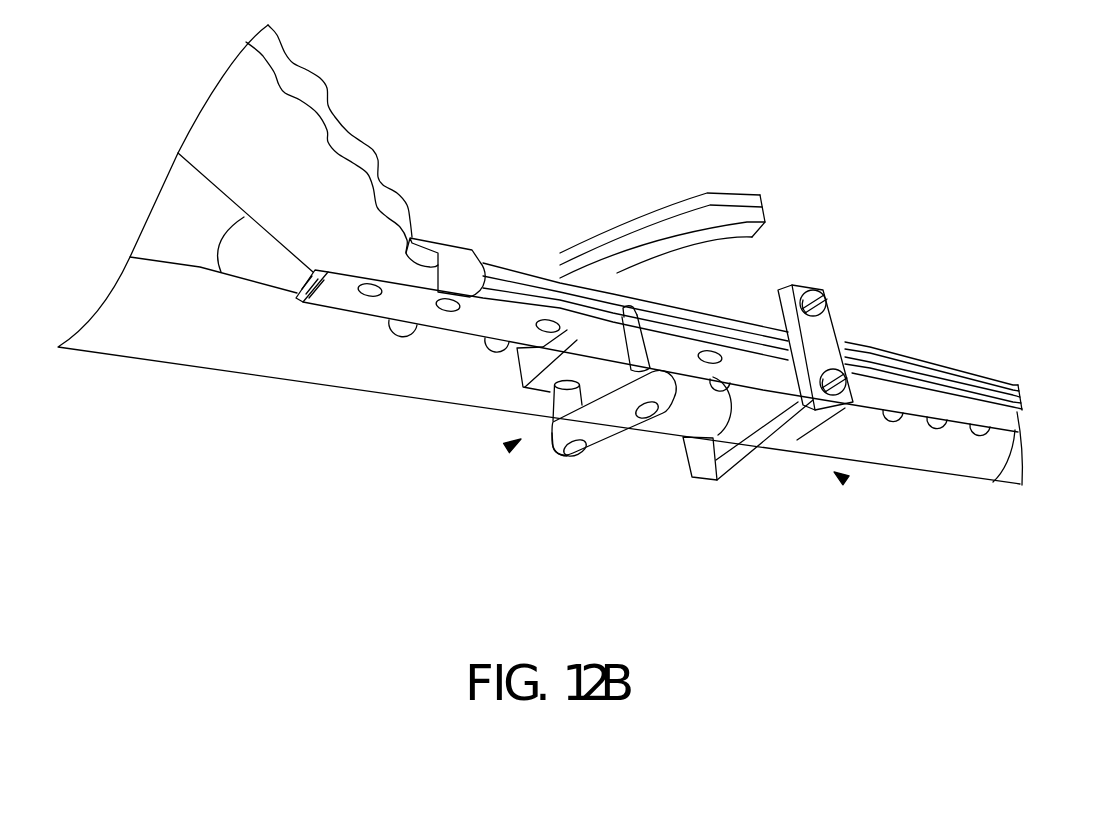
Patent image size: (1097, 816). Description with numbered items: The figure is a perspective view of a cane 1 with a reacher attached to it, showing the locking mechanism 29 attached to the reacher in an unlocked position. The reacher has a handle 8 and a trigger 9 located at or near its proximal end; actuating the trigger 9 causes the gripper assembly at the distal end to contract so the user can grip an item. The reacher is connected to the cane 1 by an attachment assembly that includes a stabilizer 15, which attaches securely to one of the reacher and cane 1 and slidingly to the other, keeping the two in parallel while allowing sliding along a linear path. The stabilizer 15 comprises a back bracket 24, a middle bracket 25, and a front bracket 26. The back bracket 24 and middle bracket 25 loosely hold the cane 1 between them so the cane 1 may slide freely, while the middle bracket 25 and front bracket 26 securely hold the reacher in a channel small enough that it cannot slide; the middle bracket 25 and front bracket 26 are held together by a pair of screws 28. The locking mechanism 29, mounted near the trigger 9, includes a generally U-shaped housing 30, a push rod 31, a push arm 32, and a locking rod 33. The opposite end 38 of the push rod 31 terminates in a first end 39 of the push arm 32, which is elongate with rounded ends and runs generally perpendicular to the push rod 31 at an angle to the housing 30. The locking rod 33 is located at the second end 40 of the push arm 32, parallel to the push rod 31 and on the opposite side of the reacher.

The cane 1 is at (173, 347).
The handle 8 is at (274, 56).
The trigger 9 is at (707, 205).
The housing 30 is at (572, 367).
The push rod 31 is at (550, 402).
The push arm 32 is at (596, 457).
The locking rod 33 is at (655, 338).
The opposite end of the push rod 38 is at (574, 456).
The first end of the push arm 39 is at (553, 453).
The second end of the push arm 40 is at (659, 412).
The back bracket 24 is at (710, 474).
The middle bracket 25 is at (767, 444).
The front bracket 26 is at (820, 338).
The screws 28 is at (840, 404).
The stabilizer 15 is at (846, 481).
The locking mechanism 29 is at (508, 446).